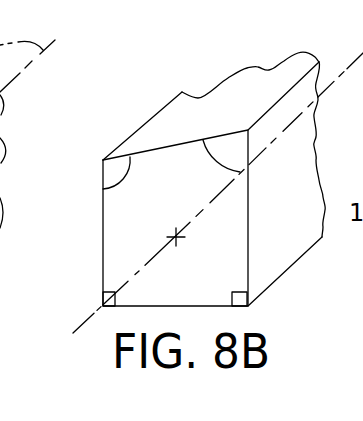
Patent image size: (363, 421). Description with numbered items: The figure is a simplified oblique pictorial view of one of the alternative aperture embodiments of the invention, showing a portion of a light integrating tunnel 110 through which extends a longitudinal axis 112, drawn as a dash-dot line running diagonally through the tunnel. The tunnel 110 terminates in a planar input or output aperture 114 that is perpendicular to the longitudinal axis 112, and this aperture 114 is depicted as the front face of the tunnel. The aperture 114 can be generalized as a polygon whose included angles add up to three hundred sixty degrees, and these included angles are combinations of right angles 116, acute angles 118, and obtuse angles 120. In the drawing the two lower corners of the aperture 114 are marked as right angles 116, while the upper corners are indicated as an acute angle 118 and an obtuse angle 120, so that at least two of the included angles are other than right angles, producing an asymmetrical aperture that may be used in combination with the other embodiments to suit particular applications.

The light integrating tunnel 110 is at (161, 140).
The longitudinal axis 112 is at (362, 63).
The input or output aperture 114 is at (123, 252).
The right angle 116 is at (232, 300).
The acute angle 118 is at (247, 173).
The obtuse angle 120 is at (122, 179).